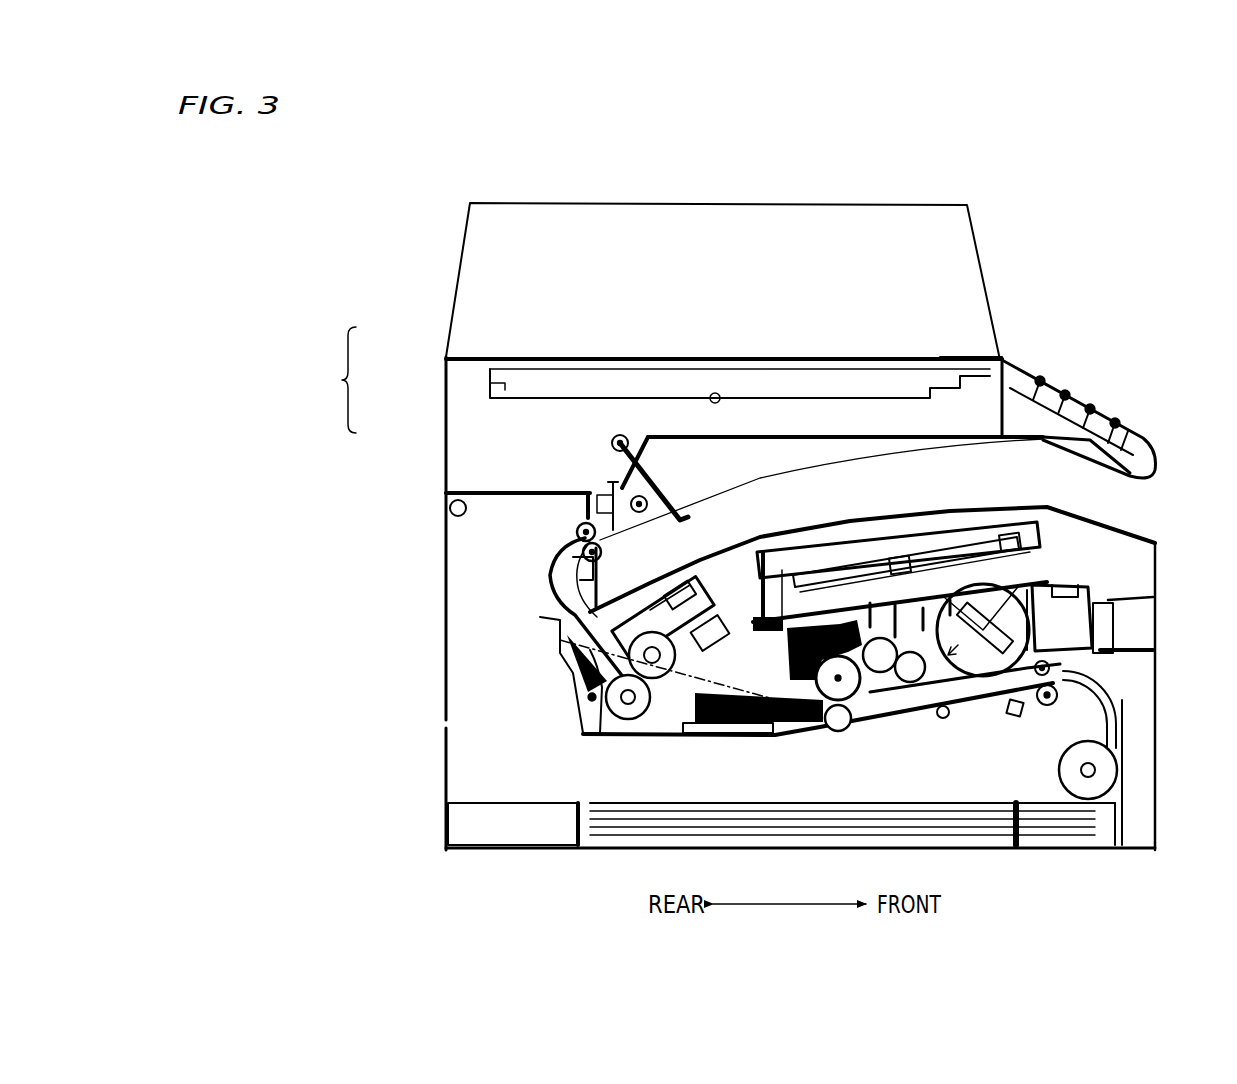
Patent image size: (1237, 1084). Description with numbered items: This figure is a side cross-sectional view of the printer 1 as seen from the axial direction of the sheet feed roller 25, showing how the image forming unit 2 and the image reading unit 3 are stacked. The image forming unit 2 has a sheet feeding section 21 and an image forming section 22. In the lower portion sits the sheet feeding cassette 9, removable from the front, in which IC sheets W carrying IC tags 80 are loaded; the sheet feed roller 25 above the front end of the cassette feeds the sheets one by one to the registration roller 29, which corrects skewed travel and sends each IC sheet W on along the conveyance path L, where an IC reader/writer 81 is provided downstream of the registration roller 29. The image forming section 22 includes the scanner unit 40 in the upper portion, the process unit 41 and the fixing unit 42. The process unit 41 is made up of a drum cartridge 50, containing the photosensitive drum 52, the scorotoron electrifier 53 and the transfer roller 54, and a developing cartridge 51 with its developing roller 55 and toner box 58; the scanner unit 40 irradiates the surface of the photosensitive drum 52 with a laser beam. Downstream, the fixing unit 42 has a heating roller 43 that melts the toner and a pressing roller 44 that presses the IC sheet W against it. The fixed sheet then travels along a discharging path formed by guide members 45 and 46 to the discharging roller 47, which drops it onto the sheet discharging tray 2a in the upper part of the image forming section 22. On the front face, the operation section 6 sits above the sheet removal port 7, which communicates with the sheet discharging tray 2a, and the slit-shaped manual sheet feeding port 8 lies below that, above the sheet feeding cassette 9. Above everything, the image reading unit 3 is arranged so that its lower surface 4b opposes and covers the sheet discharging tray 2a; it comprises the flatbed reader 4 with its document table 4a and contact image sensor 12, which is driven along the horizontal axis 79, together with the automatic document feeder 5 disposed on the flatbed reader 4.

The printer 1 is at (718, 195).
The image forming unit 2 is at (432, 612).
The sheet discharging tray 2a is at (780, 520).
The image reading unit 3 is at (339, 380).
The flatbed reader (FB) 4 is at (432, 421).
The document table 4a is at (955, 357).
The lower surface 4b is at (880, 448).
The automatic document feeder (ADF) 5 is at (432, 329).
The operation section 6 is at (1015, 365).
The sheet removal port 7 is at (1148, 493).
The manual sheet feeding port 8 is at (1128, 648).
The sheet feeding cassette 9 is at (1157, 838).
The contact image sensor 12 is at (517, 385).
The sheet feeding section 21 is at (1130, 806).
The image forming section 22 is at (782, 737).
The sheet feed roller 25 is at (1112, 760).
The registration roller 29 is at (1062, 650).
The scanner unit 40 is at (940, 520).
The process unit 41 is at (1080, 583).
The fixing unit 42 is at (697, 590).
The heating roller 43 is at (680, 666).
The pressing roller 44 is at (655, 705).
The guide member 45 is at (548, 625).
The guide member 46 is at (553, 565).
The discharging roller 47 is at (582, 548).
The drum cartridge 50 is at (795, 698).
The developing cartridge 51 is at (1058, 585).
The photosensitive drum 52 is at (815, 706).
The scorotoron electrifier 53 is at (790, 648).
The transfer roller 54 is at (840, 733).
The developing roller 55 is at (872, 700).
The toner box 58 is at (1043, 660).
The axis 79 is at (716, 404).
The IC tag (RFID tag) 80 is at (1017, 800).
The IC reader/writer 81 is at (1022, 716).
The conveyance path L is at (664, 730).
The IC sheet W is at (945, 820).